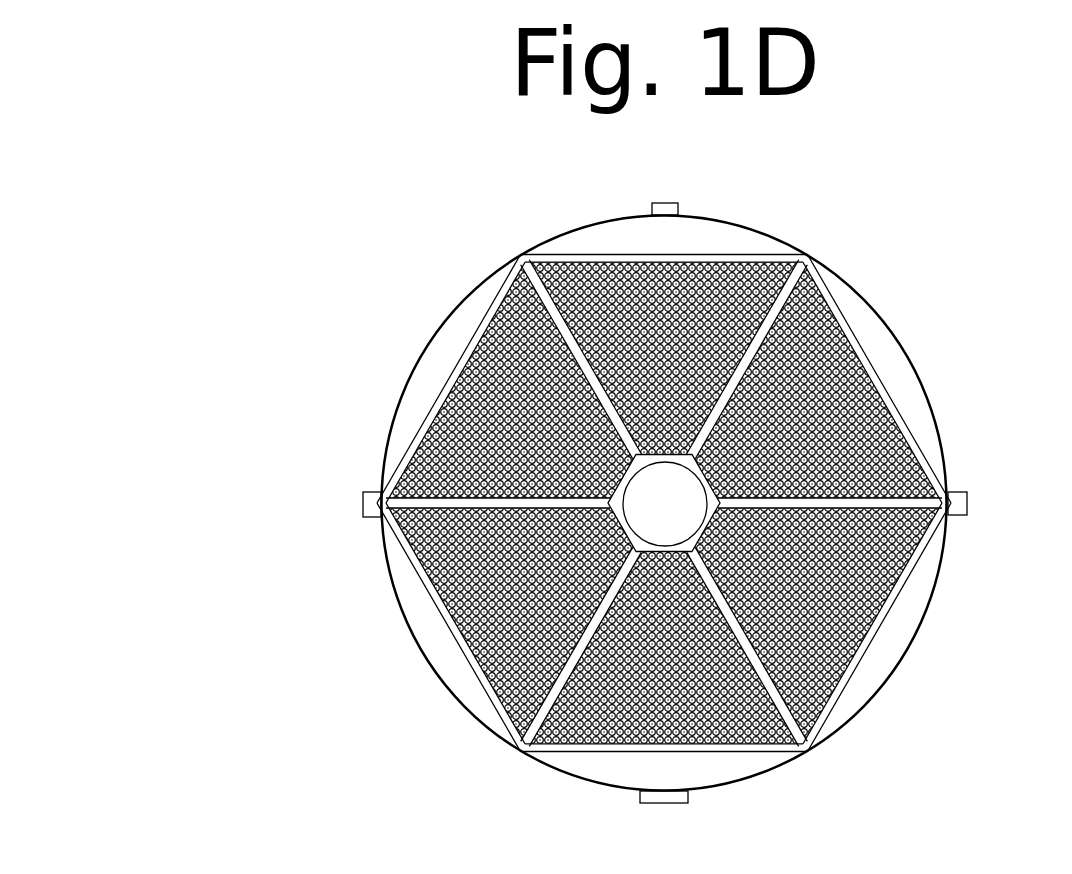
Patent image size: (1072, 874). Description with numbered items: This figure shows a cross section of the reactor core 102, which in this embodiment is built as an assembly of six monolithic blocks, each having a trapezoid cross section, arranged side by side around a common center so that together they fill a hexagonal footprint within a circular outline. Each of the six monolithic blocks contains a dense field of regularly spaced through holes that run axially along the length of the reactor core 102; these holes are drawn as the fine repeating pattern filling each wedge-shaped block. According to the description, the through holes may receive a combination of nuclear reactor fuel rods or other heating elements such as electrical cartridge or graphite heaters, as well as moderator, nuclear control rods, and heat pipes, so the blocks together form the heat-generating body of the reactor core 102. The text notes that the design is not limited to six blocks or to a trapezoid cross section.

The reactor core 102 is at (197, 283).